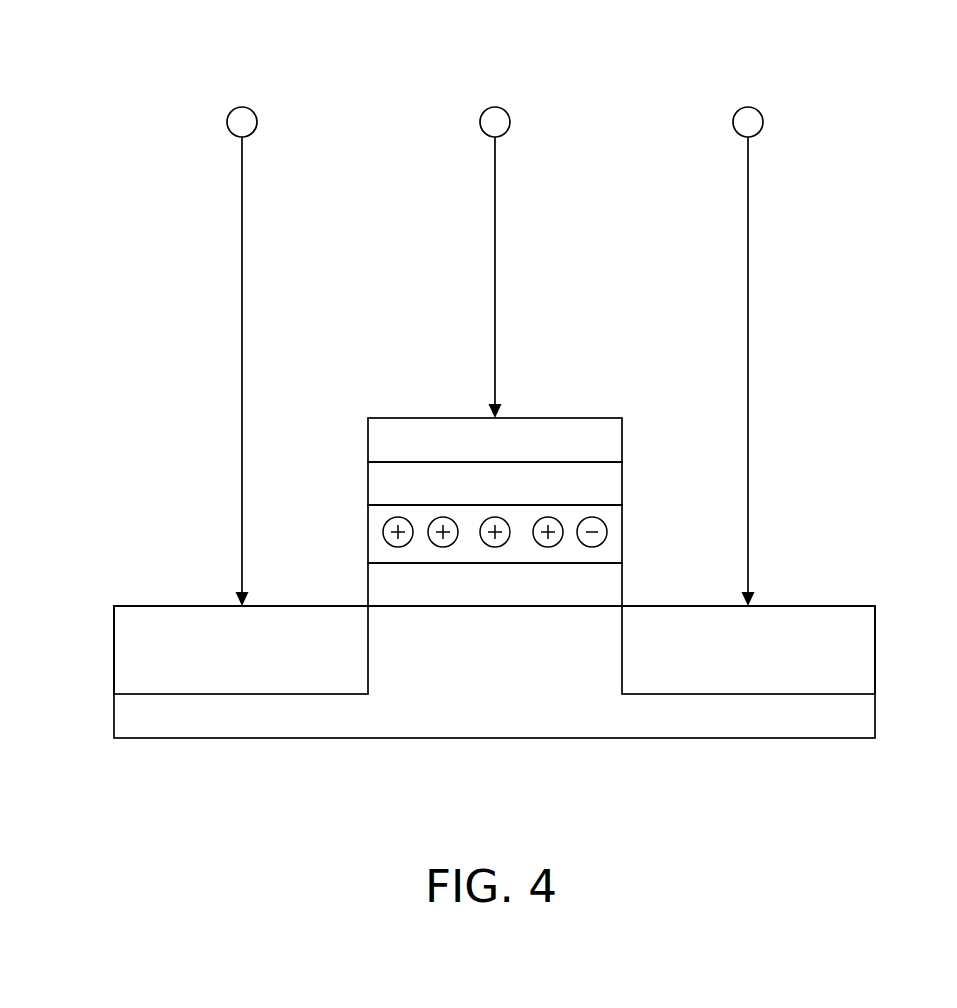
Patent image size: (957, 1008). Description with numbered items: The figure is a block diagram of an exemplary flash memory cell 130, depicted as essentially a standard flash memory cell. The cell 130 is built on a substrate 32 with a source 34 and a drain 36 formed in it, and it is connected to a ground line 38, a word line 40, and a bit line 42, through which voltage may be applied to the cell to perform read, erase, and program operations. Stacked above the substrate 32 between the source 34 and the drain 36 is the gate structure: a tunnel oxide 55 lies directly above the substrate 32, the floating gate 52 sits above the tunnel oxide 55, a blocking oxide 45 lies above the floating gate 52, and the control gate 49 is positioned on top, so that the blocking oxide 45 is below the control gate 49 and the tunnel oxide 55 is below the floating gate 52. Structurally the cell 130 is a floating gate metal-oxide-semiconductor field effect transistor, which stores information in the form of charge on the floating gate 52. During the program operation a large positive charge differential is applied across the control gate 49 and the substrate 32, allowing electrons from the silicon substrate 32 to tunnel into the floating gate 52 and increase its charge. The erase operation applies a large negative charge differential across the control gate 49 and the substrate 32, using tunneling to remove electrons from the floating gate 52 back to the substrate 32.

The flash memory cell 130 is at (110, 78).
The substrate 32 is at (868, 730).
The source 34 is at (155, 618).
The drain 36 is at (830, 625).
The ground line 38 is at (242, 187).
The word line 40 is at (495, 262).
The bit line 42 is at (748, 218).
The blocking oxide 45 is at (612, 487).
The control gate 49 is at (378, 432).
The floating gate 52 is at (375, 527).
The tunnel oxide 55 is at (608, 590).